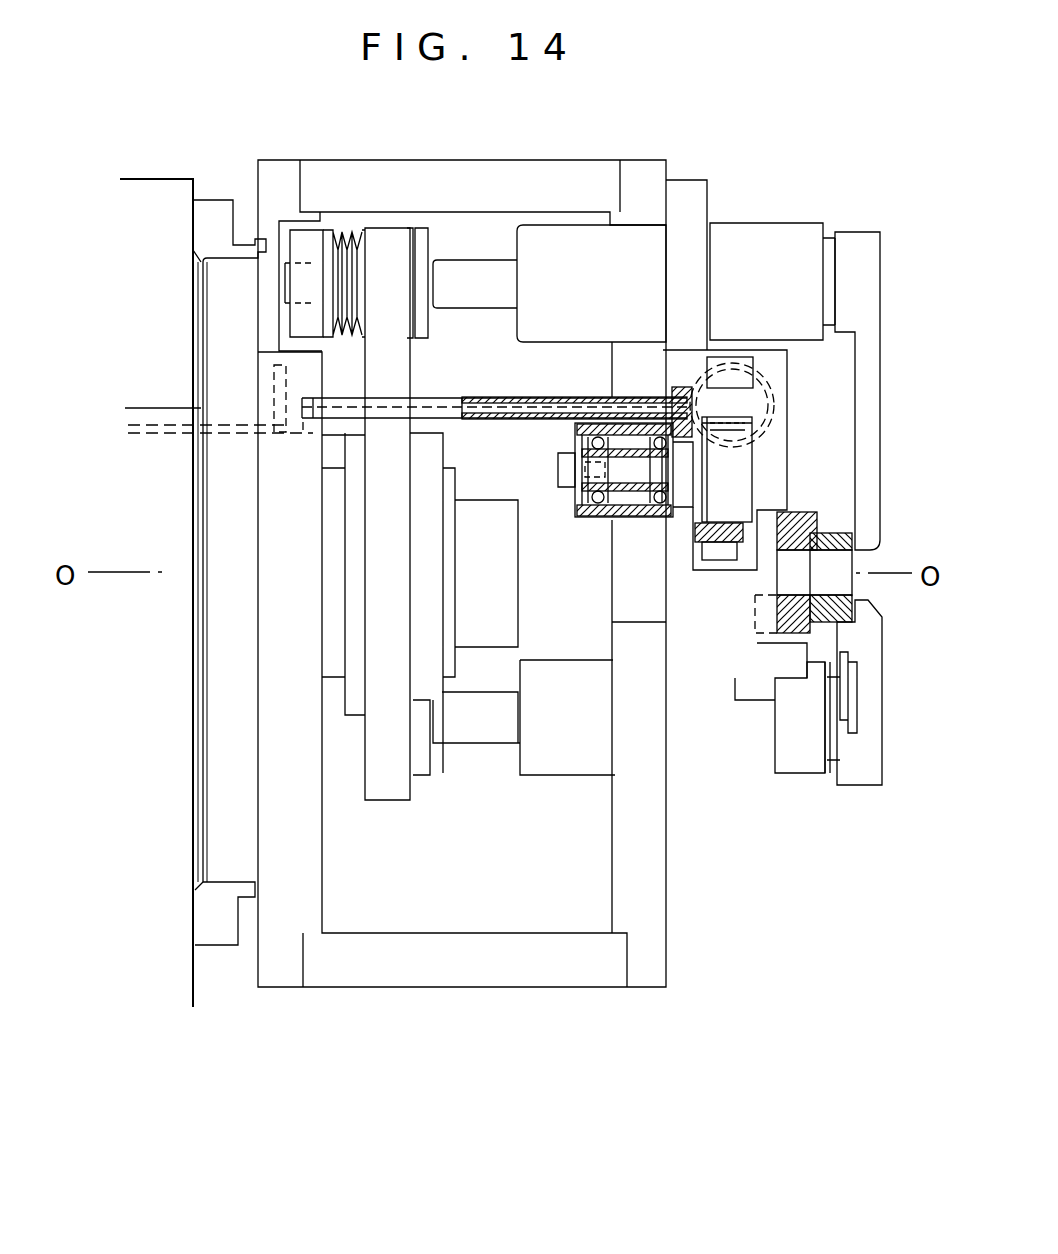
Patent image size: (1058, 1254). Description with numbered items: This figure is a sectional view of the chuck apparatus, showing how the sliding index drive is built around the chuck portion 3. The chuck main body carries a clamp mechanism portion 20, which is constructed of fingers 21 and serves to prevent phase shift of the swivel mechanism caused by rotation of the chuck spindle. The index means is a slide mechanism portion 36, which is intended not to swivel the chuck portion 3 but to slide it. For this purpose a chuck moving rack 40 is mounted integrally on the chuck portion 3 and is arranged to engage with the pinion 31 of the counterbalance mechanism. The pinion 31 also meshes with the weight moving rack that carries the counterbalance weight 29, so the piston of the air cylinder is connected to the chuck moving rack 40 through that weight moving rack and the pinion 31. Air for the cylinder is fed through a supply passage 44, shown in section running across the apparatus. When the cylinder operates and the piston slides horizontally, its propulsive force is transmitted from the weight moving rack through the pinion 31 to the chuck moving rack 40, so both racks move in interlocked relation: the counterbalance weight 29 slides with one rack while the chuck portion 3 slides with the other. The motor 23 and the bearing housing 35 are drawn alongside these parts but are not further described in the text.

The chuck portion 3 is at (828, 520).
The clamp mechanism portion 20 is at (842, 218).
The fingers 21 is at (870, 395).
The motor 23 is at (760, 223).
The counterbalance weight 29 is at (757, 362).
The pinion 31 is at (740, 460).
The bearing housing 35 is at (607, 517).
The slide mechanism portion 36 is at (765, 500).
The chuck moving rack 40 is at (722, 557).
The supply passage 44 is at (508, 420).